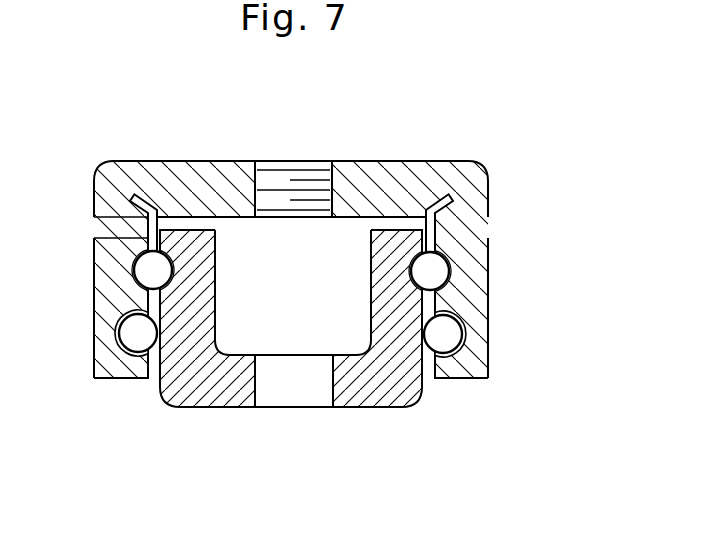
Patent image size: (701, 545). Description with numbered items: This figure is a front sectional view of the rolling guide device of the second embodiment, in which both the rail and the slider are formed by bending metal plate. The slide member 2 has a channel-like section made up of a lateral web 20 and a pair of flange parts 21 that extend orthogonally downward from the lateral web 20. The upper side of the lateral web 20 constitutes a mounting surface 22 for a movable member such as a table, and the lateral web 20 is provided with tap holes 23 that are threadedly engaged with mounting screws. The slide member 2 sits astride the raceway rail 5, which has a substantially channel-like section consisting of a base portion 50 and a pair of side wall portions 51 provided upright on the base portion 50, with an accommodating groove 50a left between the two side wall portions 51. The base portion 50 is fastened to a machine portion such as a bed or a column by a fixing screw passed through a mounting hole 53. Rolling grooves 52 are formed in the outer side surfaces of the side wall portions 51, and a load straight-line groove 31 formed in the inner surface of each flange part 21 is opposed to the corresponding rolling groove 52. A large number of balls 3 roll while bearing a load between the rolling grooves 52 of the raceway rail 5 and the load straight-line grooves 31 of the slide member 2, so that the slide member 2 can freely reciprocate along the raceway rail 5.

The slide member 2 is at (295, 300).
The balls 3 is at (137, 326).
The raceway rail 5 is at (291, 379).
The lateral web 20 is at (268, 269).
The flange parts 21 is at (118, 372).
The mounting surface 22 is at (135, 160).
The tap holes 23 is at (270, 170).
The load straight-line groove 31 is at (114, 238).
The base portion 50 is at (210, 400).
The accommodating groove 50a is at (320, 339).
The side wall portions 51 is at (216, 292).
The rolling grooves 52 is at (156, 250).
The mounting hole 53 is at (290, 392).